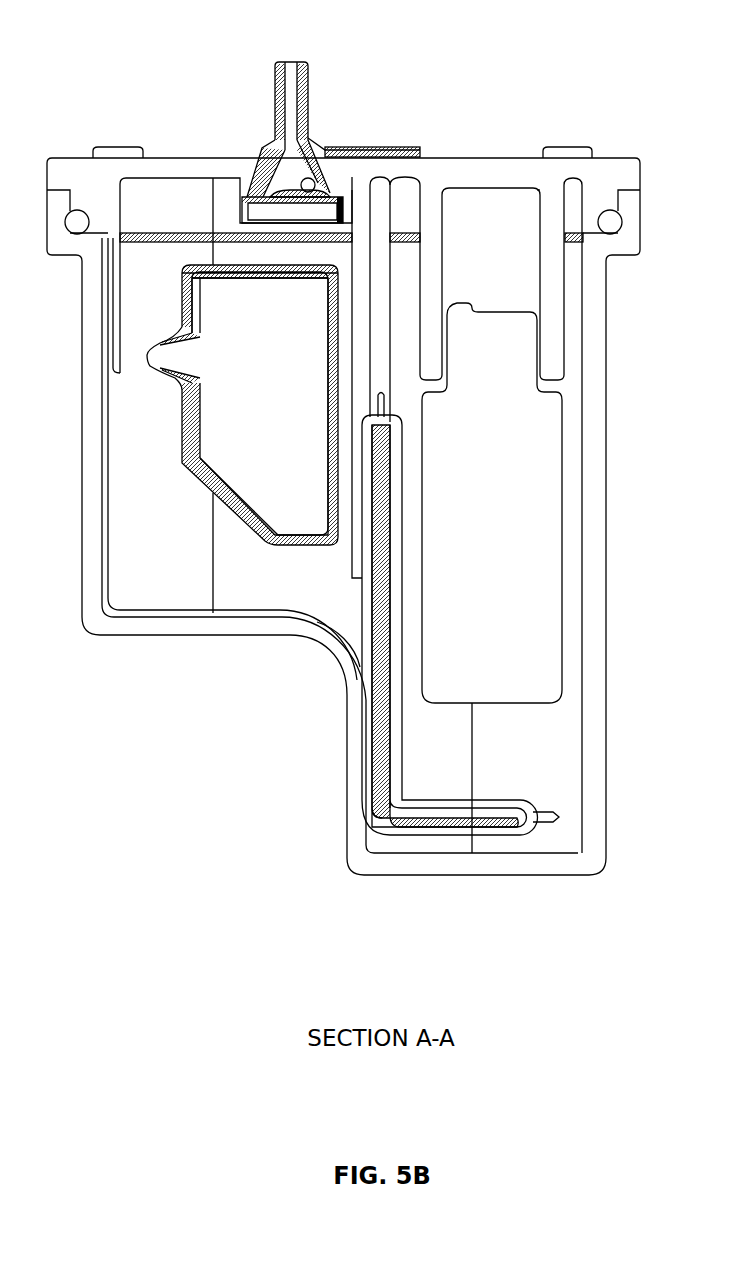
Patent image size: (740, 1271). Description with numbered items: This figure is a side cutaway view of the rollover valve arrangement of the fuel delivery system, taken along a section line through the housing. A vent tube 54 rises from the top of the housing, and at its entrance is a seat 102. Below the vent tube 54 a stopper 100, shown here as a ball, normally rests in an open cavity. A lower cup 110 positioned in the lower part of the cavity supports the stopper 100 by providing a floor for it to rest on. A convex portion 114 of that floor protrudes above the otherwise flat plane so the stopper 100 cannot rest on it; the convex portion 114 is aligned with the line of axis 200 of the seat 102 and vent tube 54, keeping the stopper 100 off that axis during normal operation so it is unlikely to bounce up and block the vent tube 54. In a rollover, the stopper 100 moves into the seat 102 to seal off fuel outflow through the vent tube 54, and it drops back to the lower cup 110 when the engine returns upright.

The line of axis 200 is at (291, 4).
The vent tube 54 is at (303, 97).
The convex portion 114 is at (287, 200).
The seat 102 is at (283, 147).
The stopper 100 is at (313, 183).
The lower cup 110 is at (343, 207).